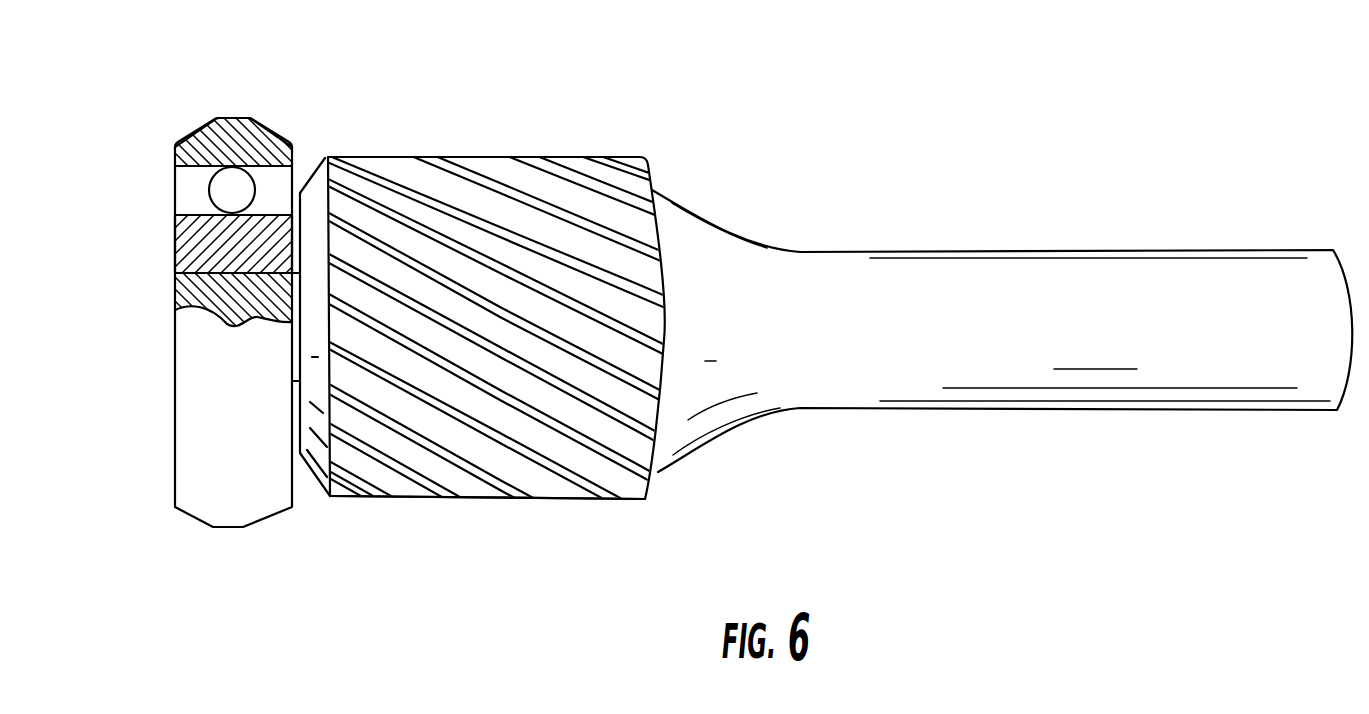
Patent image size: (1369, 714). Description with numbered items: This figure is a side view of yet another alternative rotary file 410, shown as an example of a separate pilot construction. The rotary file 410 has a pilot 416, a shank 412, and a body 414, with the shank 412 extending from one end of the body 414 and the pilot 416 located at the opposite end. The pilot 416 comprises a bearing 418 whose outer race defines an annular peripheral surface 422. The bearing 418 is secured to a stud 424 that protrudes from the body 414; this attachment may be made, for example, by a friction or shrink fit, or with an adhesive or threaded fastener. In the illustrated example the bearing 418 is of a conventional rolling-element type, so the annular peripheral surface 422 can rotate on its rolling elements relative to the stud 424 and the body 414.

The rotary file 410 is at (590, 150).
The shank 412 is at (945, 250).
The body 414 is at (533, 494).
The pilot 416 is at (205, 271).
The bearing 418 is at (175, 243).
The annular peripheral surface 422 is at (231, 110).
The stud 424 is at (175, 290).